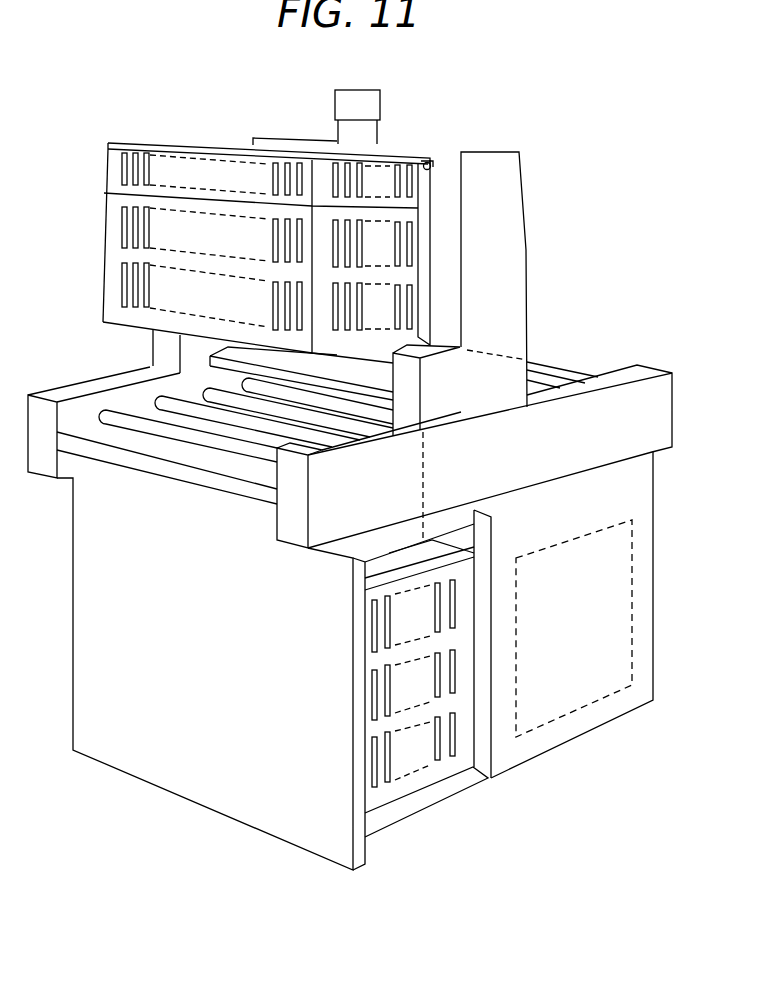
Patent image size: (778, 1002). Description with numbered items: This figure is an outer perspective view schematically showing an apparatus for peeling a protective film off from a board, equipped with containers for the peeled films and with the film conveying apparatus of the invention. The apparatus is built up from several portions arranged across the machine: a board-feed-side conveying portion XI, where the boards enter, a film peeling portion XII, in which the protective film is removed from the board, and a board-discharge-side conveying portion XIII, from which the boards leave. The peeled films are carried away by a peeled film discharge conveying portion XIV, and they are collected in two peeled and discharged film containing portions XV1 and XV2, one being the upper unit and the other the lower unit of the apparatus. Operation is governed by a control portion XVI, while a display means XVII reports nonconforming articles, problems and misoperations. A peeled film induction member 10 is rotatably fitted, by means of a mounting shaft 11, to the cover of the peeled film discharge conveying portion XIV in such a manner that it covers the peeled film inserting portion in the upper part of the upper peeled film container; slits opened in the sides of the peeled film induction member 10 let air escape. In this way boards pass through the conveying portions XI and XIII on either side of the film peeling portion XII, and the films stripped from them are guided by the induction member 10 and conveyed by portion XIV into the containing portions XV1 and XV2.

The peeled film induction member 10 is at (237, 157).
The mounting shaft 11 is at (431, 163).
The display means XVII is at (367, 94).
The peeled and discharged film containing portion XV1 is at (110, 199).
The board-feed-side conveying portion XI is at (170, 407).
The peeled film discharge conveying portion XIV is at (521, 268).
The board-discharge-side conveying portion XIII is at (555, 373).
The film peeling portion XII is at (538, 474).
The control portion XVI is at (622, 637).
The peeled and discharged film containing portion XV2 is at (423, 767).